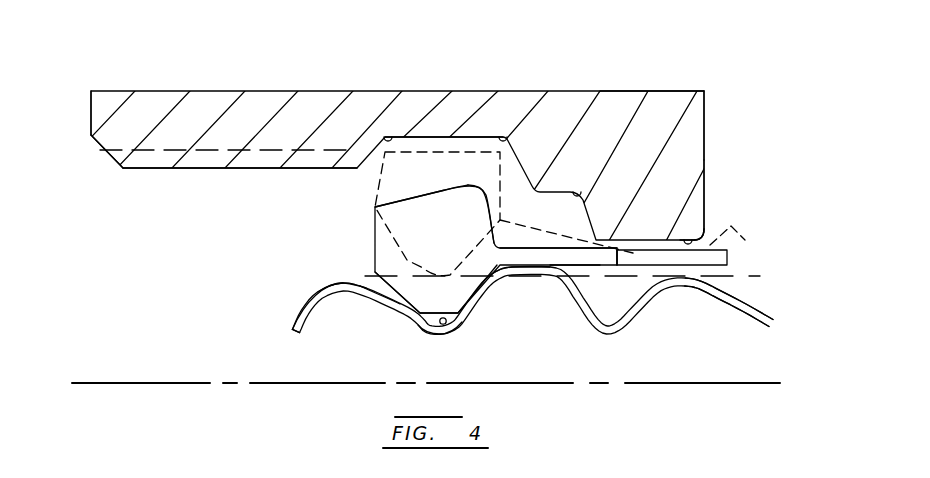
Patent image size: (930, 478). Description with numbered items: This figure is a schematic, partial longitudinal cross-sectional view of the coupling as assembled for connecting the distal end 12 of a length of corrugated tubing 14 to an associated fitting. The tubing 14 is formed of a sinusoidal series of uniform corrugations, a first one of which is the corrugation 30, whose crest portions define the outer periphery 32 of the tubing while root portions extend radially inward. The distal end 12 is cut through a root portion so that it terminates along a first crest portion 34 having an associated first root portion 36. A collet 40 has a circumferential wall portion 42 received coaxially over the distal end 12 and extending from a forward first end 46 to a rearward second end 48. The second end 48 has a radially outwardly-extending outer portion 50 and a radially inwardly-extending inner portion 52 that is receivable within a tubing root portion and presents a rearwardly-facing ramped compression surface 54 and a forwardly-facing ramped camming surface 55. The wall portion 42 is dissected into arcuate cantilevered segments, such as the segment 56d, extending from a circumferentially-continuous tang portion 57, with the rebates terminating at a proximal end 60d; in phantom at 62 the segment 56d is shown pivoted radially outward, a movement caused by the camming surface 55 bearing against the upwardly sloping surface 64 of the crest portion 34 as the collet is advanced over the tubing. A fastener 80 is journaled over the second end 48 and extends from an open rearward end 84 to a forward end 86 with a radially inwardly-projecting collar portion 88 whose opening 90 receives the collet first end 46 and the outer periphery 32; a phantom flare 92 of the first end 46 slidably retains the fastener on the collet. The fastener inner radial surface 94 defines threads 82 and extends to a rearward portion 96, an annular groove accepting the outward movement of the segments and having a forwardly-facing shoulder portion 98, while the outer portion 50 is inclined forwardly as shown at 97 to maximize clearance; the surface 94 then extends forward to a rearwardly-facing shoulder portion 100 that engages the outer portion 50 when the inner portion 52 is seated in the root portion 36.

The distal end 12 is at (290, 333).
The corrugated tubing 14 is at (283, 265).
The corrugation 30 is at (308, 303).
The outer periphery 32 is at (760, 276).
The first crest portion 34 is at (355, 282).
The first root portion 36 is at (452, 332).
The collet 40 is at (766, 196).
The wall portion 42 is at (598, 102).
The first end 46 is at (727, 256).
The second end 48 is at (375, 207).
The outer portion 50 is at (478, 185).
The inner portion 52 is at (417, 332).
The compression surface 54 is at (372, 287).
The camming surface 55 is at (497, 278).
The cantilevered segment 56d is at (573, 260).
The tang portion 57 is at (672, 258).
The proximal end 60d is at (620, 256).
The phantom segment position 62 is at (460, 150).
The upwardly sloping surface 64 is at (323, 287).
The fastener 80 is at (645, 72).
The threads 82 is at (140, 168).
The rearward end 84 is at (92, 98).
The forward end 86 is at (704, 105).
The collar portion 88 is at (704, 195).
The opening 90 is at (697, 230).
The flare 92 is at (733, 228).
The inner radial surface 94 is at (242, 168).
The rearward portion 96 is at (517, 248).
The forward inclination 97 is at (422, 195).
The forwardly-facing shoulder portion 98 is at (394, 137).
The rearwardly-facing shoulder portion 100 is at (668, 91).